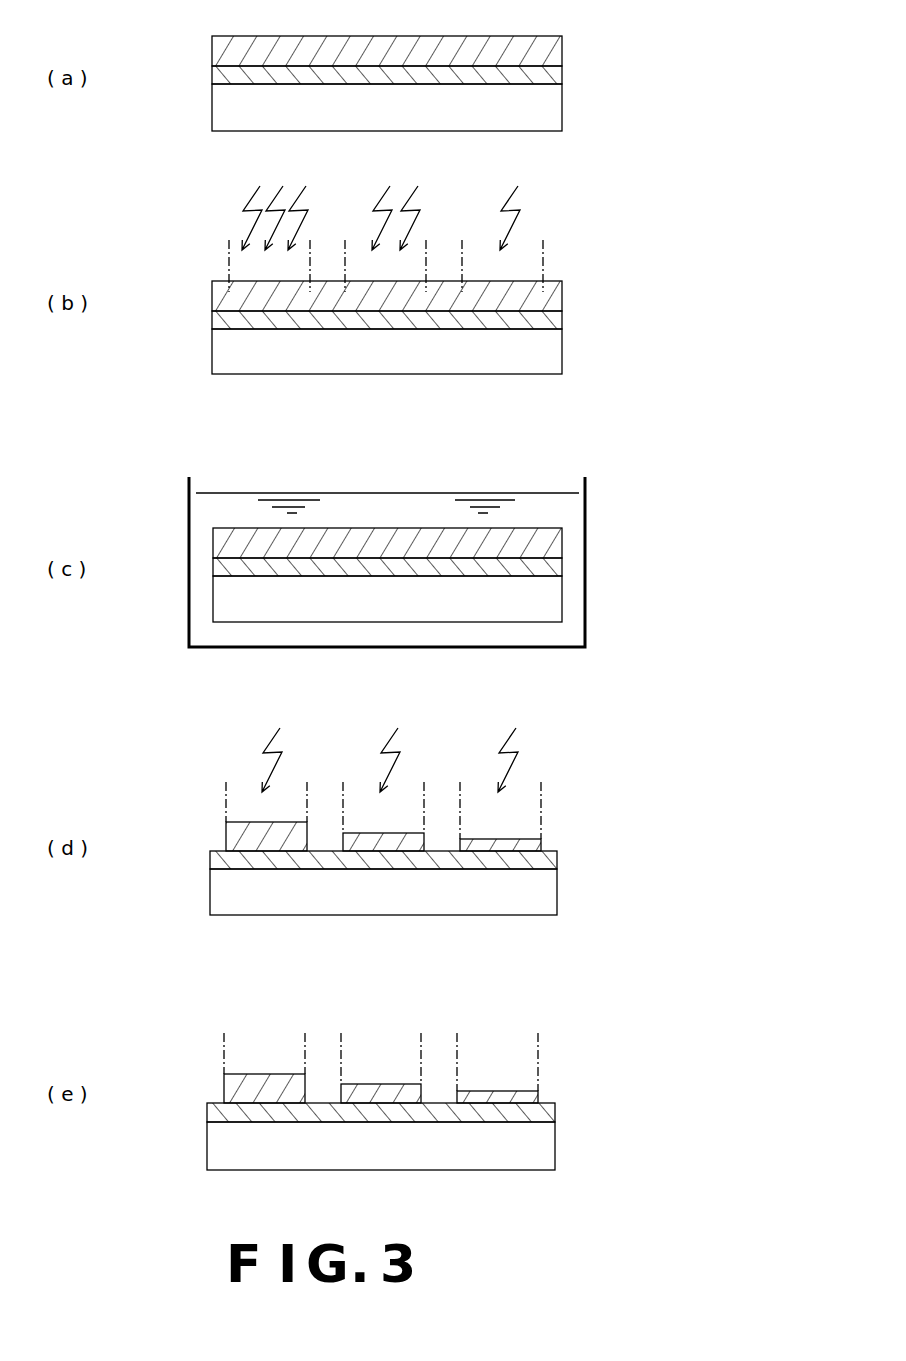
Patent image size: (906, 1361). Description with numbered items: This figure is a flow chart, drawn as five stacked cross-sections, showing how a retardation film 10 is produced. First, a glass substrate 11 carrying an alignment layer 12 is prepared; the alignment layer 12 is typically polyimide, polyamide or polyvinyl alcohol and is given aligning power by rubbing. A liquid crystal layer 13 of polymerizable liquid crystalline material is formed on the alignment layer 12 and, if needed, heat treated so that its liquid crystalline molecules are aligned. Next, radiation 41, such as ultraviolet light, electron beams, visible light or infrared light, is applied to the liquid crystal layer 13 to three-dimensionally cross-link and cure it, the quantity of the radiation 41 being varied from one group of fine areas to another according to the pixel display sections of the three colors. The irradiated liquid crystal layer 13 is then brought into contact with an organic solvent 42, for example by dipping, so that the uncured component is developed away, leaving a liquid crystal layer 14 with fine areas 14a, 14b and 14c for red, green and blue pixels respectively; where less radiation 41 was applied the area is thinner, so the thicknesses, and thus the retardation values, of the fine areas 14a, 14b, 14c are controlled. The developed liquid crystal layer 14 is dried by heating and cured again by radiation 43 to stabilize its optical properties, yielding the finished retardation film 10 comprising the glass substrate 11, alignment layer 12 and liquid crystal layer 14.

The retardation film 10 is at (561, 1079).
The glass substrate 11 is at (552, 120).
The alignment layer 12 is at (550, 77).
The liquid crystal layer 13 is at (562, 53).
The liquid crystal layer 14 is at (558, 829).
The fine area 14a is at (265, 1073).
The fine area 14b is at (373, 1083).
The fine area 14c is at (488, 1089).
The radiation 41 is at (516, 202).
The organic solvent 42 is at (508, 508).
The radiation 43 is at (514, 742).